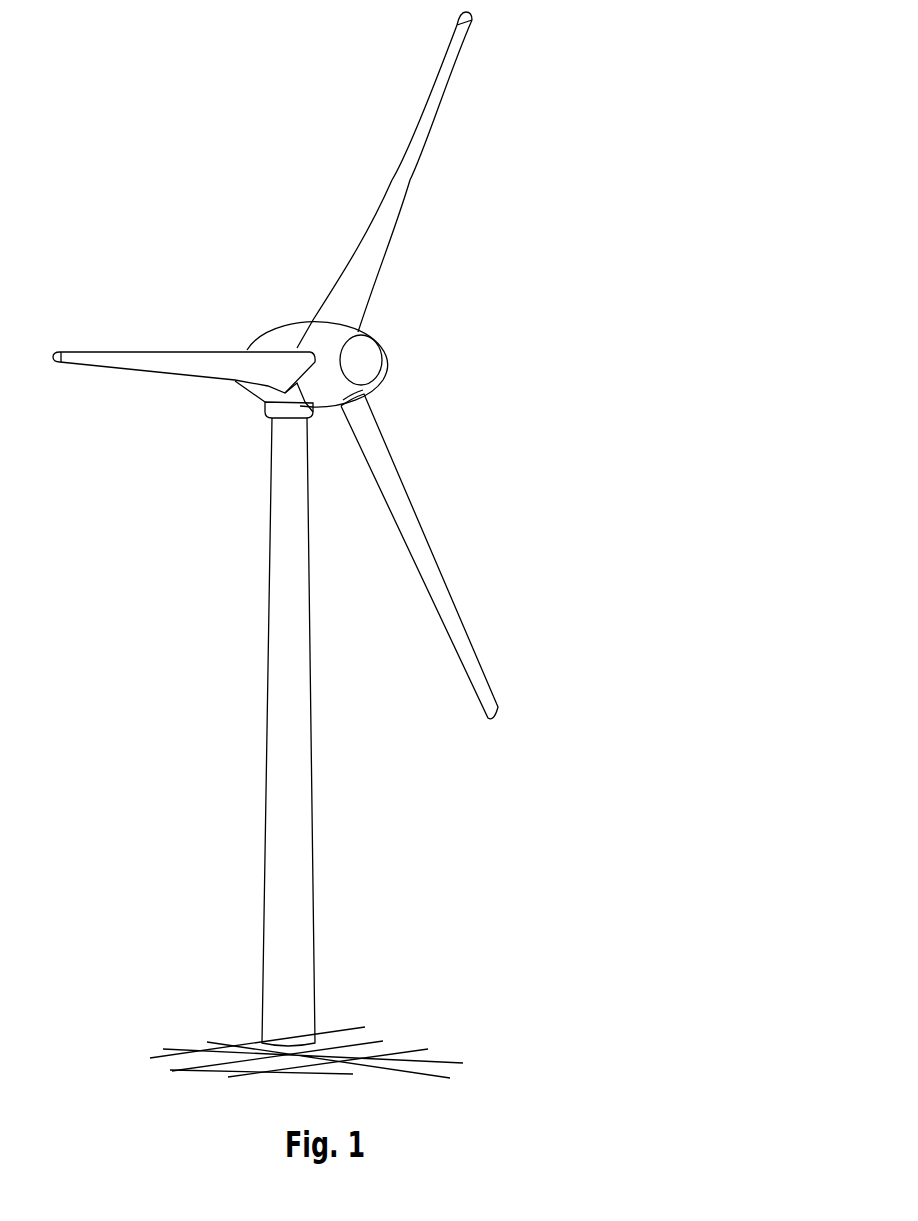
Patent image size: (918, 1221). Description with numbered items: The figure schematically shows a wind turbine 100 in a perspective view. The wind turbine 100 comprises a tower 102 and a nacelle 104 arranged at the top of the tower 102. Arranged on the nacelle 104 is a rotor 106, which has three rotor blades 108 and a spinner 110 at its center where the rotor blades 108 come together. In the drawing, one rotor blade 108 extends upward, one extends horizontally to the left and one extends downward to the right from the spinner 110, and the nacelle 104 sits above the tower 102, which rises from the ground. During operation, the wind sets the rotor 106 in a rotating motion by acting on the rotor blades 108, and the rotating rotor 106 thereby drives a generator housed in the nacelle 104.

The wind turbine 100 is at (320, 545).
The tower 102 is at (295, 826).
The nacelle 104 is at (283, 340).
The rotor 106 is at (320, 365).
The rotor blades 108 is at (422, 132).
The spinner 110 is at (367, 362).